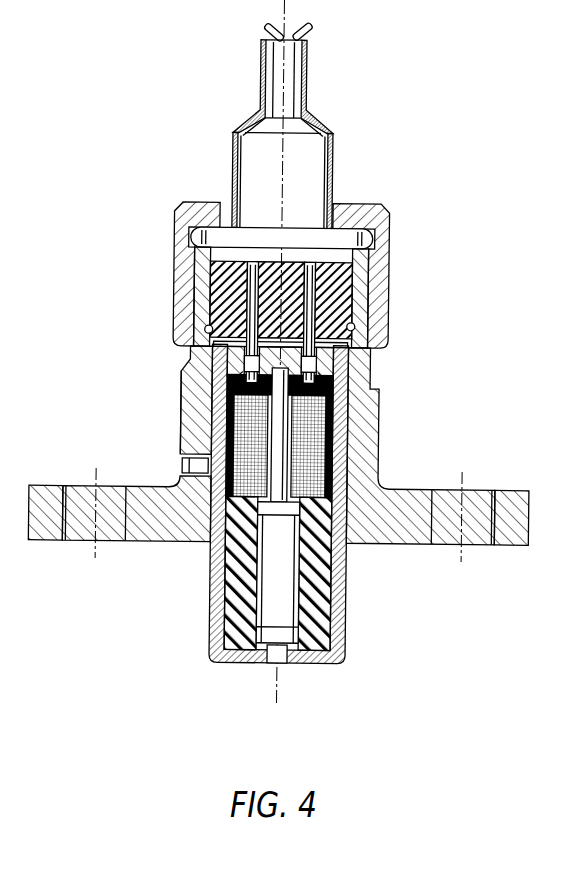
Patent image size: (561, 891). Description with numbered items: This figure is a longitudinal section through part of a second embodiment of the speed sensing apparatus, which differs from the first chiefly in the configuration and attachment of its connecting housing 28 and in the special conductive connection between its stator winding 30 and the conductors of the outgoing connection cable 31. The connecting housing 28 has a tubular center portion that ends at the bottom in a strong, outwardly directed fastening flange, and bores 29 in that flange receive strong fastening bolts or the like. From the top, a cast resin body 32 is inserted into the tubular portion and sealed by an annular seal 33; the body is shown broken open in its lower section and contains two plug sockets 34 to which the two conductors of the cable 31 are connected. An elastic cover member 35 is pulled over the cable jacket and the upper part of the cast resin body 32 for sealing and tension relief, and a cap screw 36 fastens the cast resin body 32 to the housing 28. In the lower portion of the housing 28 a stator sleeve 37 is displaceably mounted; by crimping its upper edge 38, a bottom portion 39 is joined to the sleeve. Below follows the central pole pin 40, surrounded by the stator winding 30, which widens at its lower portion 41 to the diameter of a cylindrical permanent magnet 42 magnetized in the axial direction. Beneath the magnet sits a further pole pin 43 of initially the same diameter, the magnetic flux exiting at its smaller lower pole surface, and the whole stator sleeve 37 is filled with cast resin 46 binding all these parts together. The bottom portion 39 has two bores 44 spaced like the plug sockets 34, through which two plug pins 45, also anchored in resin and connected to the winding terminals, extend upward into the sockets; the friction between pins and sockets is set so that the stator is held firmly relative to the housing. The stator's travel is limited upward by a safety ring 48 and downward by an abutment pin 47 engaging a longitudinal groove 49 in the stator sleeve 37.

The connecting housing 28 is at (369, 397).
The bores 29 is at (475, 530).
The stator winding 30 is at (307, 466).
The outgoing connection cable 31 is at (286, 63).
The cast resin body 32 is at (308, 170).
The annular seal 33 is at (209, 288).
The plug sockets 34 is at (351, 297).
The elastic cover member 35 is at (319, 124).
The cap screw 36 is at (376, 256).
The stator sleeve 37 is at (338, 576).
The upper edge of stator sleeve 38 is at (346, 349).
The bottom portion 39 is at (187, 381).
The central pole pin 40 is at (284, 424).
The lower portion of pole pin 41 is at (239, 529).
The cylindrical permanent magnet 42 is at (268, 591).
The pole pin 43 is at (283, 660).
The bores 44 is at (212, 347).
The plug pins 45 is at (354, 322).
The cast resin 46 is at (325, 632).
The abutment pin 47 is at (184, 468).
The safety ring 48 is at (205, 329).
The longitudinal groove 49 is at (183, 443).